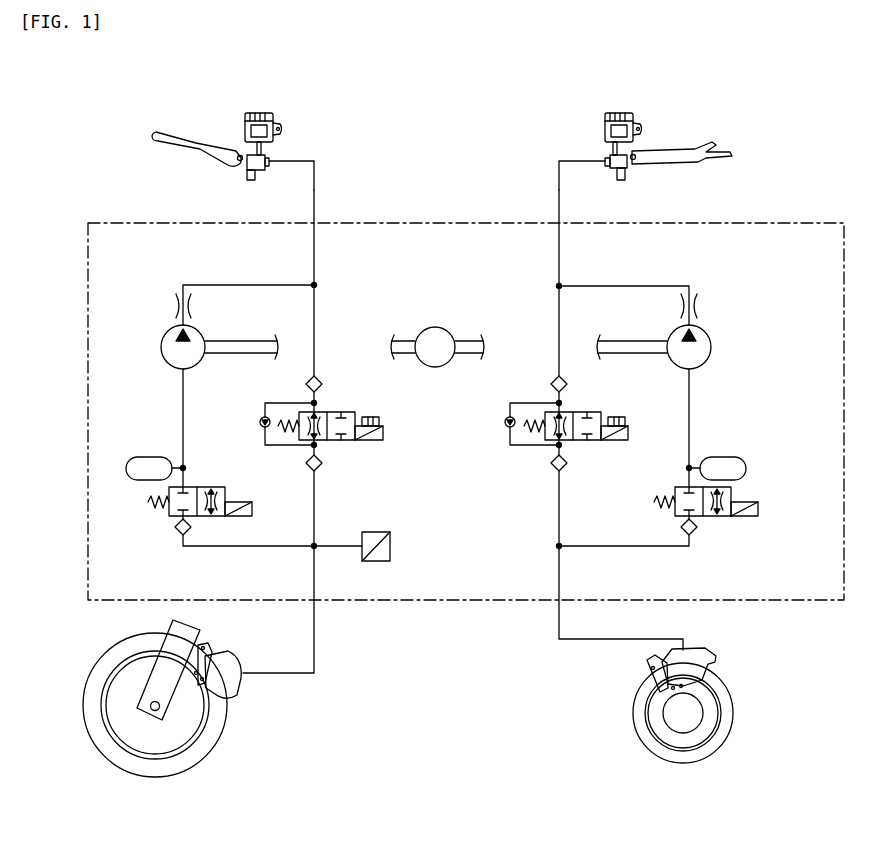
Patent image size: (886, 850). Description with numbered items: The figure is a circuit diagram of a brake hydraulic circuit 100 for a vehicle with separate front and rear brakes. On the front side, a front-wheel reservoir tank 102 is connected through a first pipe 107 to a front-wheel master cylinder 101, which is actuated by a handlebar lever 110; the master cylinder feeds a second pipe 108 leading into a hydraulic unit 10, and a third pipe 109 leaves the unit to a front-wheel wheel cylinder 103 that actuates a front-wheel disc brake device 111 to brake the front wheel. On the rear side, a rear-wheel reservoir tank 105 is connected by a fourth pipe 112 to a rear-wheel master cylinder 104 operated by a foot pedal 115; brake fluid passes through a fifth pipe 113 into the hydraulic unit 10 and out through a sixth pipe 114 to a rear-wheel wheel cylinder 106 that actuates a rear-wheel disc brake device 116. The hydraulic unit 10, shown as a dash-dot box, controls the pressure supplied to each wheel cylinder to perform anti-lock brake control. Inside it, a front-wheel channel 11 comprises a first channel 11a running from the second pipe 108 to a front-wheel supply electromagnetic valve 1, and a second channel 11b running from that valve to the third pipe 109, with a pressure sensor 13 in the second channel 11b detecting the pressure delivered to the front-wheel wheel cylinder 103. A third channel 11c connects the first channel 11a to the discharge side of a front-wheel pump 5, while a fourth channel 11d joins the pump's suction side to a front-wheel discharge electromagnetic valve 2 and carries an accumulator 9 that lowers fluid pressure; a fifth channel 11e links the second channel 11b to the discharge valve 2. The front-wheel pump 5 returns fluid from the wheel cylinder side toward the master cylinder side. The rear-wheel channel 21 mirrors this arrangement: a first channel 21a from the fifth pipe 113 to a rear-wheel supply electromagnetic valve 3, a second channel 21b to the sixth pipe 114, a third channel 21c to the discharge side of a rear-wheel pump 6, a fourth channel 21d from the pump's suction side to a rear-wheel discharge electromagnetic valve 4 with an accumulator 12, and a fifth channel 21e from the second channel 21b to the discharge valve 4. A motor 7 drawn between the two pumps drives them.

The brake hydraulic circuit 100 is at (470, 130).
The hydraulic unit 10 is at (755, 223).
The front-wheel channel 11 is at (340, 325).
The first channel 11a is at (314, 243).
The second channel 11b is at (314, 493).
The third channel 11c is at (250, 285).
The fourth channel 11d is at (183, 380).
The fifth channel 11e is at (292, 546).
The rear-wheel channel 21 is at (538, 325).
The first channel 21a is at (559, 243).
The second channel 21b is at (559, 493).
The third channel 21c is at (640, 286).
The fourth channel 21d is at (689, 402).
The fifth channel 21e is at (600, 546).
The front-wheel supply electromagnetic valve 1 is at (358, 415).
The front-wheel discharge electromagnetic valve 2 is at (230, 496).
The rear-wheel supply electromagnetic valve 3 is at (589, 411).
The rear-wheel discharge electromagnetic valve 4 is at (736, 496).
The front-wheel pump 5 is at (200, 359).
The rear-wheel pump 6 is at (711, 340).
The motor 7 is at (448, 330).
The accumulator 9 is at (137, 456).
The accumulator 12 is at (746, 462).
The pressure sensor 13 is at (390, 540).
The front-wheel master cylinder 101 is at (260, 172).
The front-wheel reservoir tank 102 is at (245, 127).
The front-wheel wheel cylinder 103 is at (240, 690).
The rear-wheel master cylinder 104 is at (619, 180).
The rear-wheel reservoir tank 105 is at (633, 120).
The rear-wheel wheel cylinder 106 is at (702, 656).
The first pipe 107 is at (262, 150).
The second pipe 108 is at (314, 188).
The third pipe 109 is at (314, 665).
The handlebar lever 110 is at (173, 148).
The front-wheel disc brake device 111 is at (222, 656).
The fourth pipe 112 is at (613, 150).
The fifth pipe 113 is at (559, 186).
The sixth pipe 114 is at (585, 640).
The foot pedal 115 is at (732, 154).
The rear-wheel disc brake device 116 is at (658, 683).